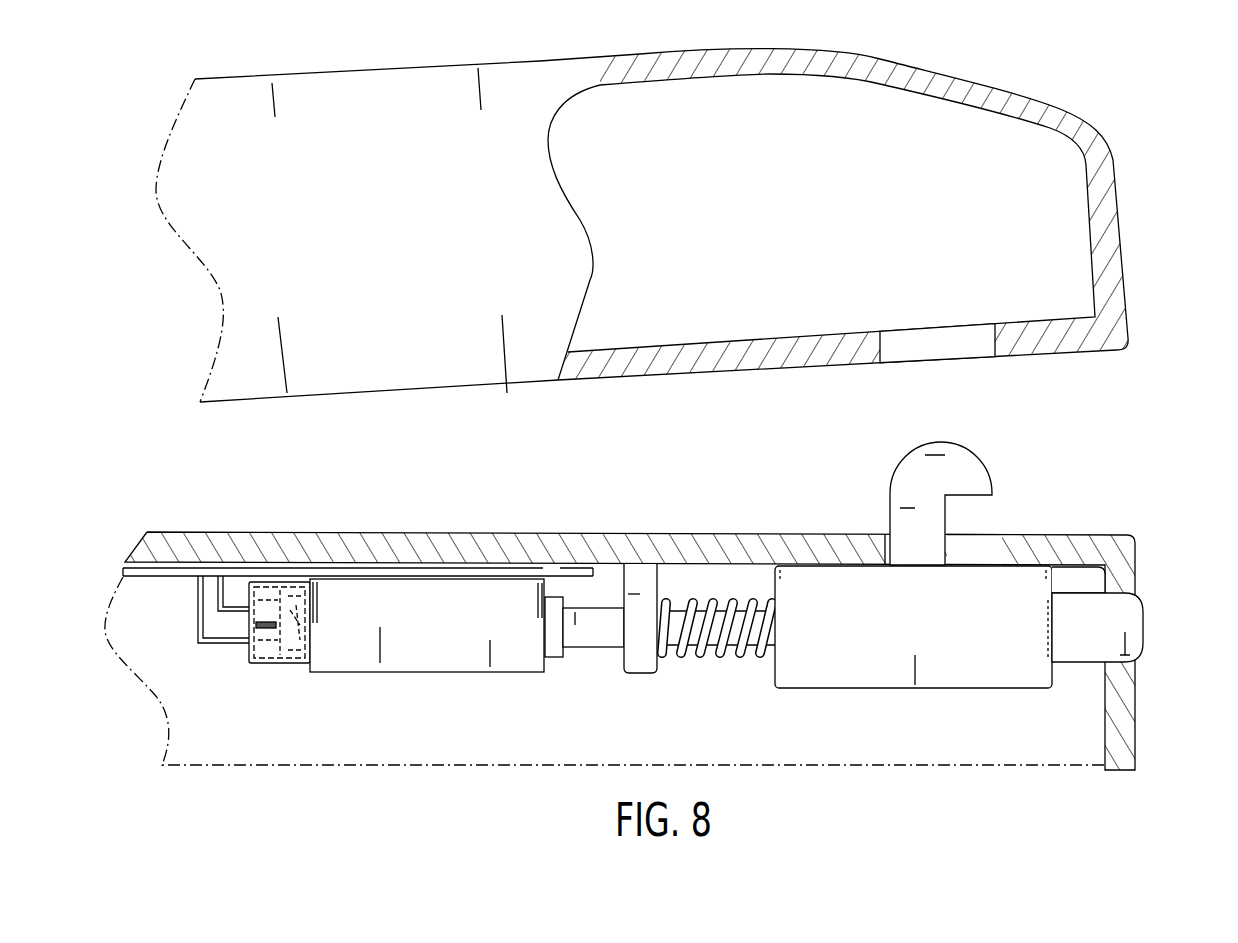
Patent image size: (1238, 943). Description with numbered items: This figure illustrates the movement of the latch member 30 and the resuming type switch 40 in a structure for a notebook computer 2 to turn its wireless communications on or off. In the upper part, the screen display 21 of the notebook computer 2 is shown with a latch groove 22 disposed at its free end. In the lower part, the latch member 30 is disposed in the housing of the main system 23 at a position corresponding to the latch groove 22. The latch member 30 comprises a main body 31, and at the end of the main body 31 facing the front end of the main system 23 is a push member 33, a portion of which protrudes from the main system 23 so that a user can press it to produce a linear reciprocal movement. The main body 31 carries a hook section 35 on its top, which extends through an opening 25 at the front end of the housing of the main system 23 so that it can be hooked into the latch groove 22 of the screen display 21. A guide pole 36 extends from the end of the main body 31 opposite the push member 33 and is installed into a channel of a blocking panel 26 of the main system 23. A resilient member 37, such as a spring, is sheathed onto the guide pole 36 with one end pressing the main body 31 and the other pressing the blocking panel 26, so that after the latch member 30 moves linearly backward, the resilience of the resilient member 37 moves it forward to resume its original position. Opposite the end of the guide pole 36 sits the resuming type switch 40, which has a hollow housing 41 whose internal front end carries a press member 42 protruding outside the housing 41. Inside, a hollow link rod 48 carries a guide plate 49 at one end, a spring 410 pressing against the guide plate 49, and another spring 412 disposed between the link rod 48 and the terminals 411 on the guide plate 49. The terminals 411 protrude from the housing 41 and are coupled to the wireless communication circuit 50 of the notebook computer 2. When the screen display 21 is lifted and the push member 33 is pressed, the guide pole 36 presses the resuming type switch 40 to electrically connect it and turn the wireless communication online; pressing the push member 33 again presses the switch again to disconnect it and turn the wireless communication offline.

The notebook computer 2 is at (685, 234).
The screen display 21 is at (1108, 213).
The latch groove 22 is at (912, 348).
The main system 23 is at (656, 631).
The opening 25 is at (975, 547).
The blocking panel 26 is at (641, 582).
The latch member 30 is at (987, 597).
The main body 31 is at (870, 640).
The push member 33 is at (1113, 630).
The hook section 35 is at (965, 485).
The guide pole 36 is at (610, 632).
The resilient member 37 is at (696, 600).
The resuming type switch 40 is at (373, 617).
The housing 41 is at (430, 638).
The press member 42 is at (550, 643).
The link rod 48 is at (300, 583).
The guide plate 49 is at (272, 583).
The wireless communication circuit 50 is at (178, 574).
The spring 410 is at (297, 660).
The terminal 411 is at (240, 612).
The spring 412 is at (290, 607).